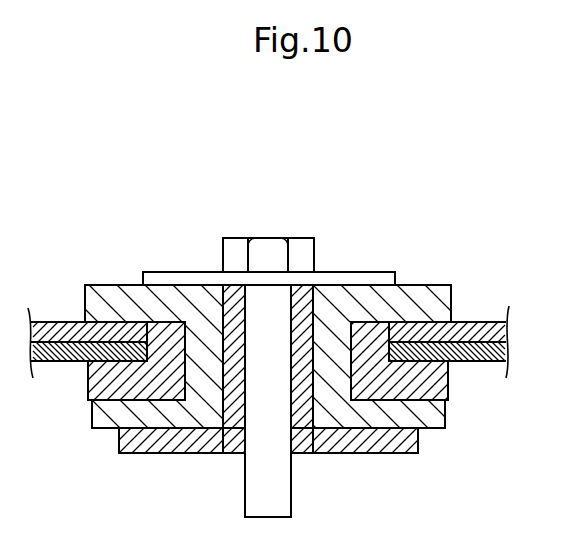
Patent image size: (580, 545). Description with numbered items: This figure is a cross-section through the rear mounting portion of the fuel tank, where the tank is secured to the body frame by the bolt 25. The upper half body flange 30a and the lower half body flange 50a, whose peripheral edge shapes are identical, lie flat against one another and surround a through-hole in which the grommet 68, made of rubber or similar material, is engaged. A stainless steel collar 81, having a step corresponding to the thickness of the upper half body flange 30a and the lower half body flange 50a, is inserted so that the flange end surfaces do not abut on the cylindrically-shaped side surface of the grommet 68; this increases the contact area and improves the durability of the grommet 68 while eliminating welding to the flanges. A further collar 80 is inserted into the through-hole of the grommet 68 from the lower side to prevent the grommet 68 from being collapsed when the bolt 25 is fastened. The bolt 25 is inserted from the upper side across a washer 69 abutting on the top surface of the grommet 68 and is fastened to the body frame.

The bolt 25 is at (265, 247).
The washer 69 is at (347, 280).
The grommet 68 is at (418, 295).
The upper half body flange 30a is at (55, 322).
The lower half body flange 50a is at (53, 362).
The collar 80 is at (348, 454).
The collar 81 is at (390, 399).